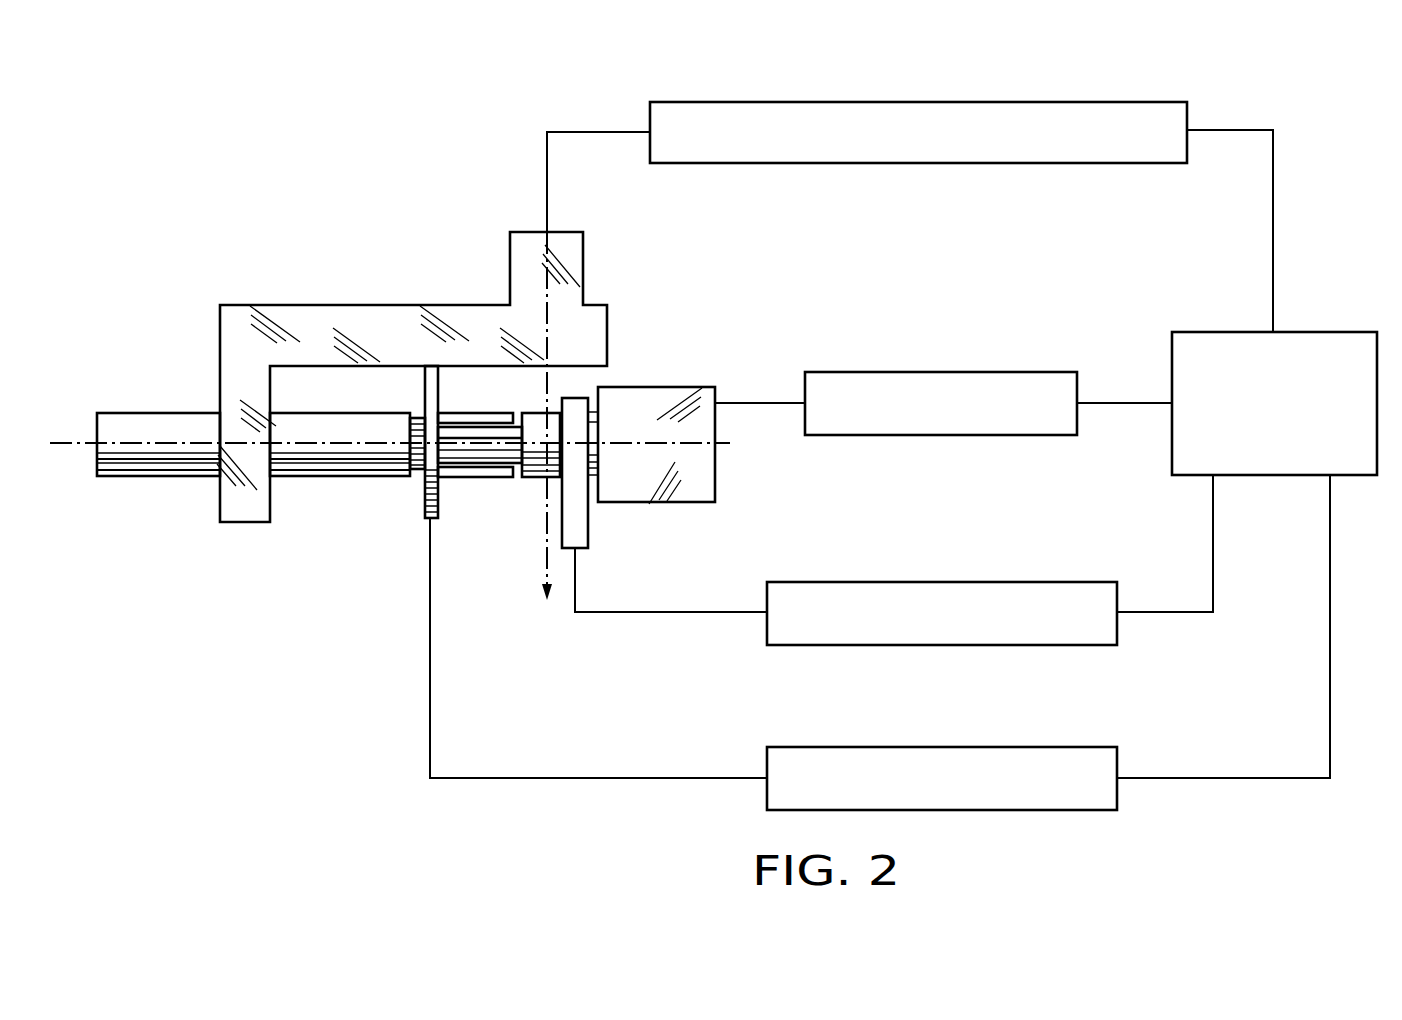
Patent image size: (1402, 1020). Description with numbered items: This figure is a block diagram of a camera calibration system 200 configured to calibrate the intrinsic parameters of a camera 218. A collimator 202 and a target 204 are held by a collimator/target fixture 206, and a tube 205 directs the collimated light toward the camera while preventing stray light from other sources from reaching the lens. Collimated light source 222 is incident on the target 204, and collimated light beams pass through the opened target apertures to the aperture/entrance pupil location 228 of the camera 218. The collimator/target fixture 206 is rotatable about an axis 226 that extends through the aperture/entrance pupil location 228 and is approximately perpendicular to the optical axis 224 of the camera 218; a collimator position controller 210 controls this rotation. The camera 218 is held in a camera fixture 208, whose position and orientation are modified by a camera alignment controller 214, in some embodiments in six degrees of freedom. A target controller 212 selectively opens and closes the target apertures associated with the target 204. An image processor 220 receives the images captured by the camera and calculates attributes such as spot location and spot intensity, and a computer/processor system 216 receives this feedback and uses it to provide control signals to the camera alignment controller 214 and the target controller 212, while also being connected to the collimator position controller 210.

The camera calibration system 200 is at (170, 143).
The collimator 202 is at (178, 412).
The target 204 is at (423, 497).
The tube 205 is at (482, 470).
The collimator/target fixture 206 is at (371, 305).
The camera fixture 208 is at (589, 522).
The collimator position controller 210 is at (773, 101).
The target controller 212 is at (865, 746).
The camera alignment controller 214 is at (865, 581).
The computer/processor system 216 is at (1230, 331).
The camera 218 is at (647, 386).
The image processor 220 is at (883, 371).
The collimated light source 222 is at (493, 432).
The optical axis 224 is at (80, 442).
The axis 226 is at (546, 592).
The aperture/entrance pupil location 228 is at (537, 482).